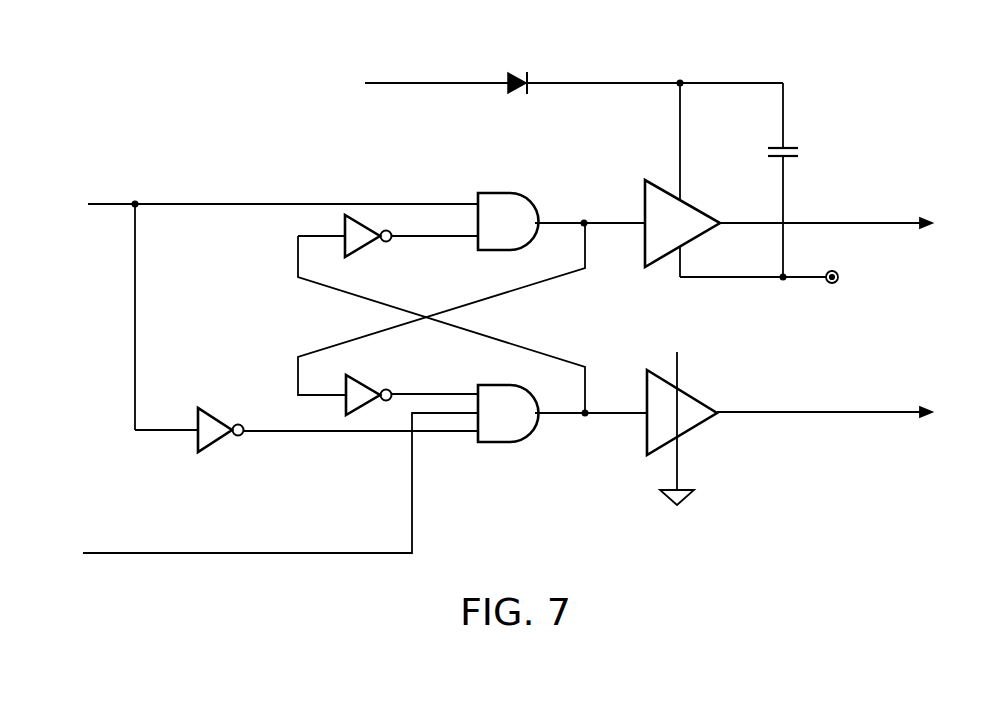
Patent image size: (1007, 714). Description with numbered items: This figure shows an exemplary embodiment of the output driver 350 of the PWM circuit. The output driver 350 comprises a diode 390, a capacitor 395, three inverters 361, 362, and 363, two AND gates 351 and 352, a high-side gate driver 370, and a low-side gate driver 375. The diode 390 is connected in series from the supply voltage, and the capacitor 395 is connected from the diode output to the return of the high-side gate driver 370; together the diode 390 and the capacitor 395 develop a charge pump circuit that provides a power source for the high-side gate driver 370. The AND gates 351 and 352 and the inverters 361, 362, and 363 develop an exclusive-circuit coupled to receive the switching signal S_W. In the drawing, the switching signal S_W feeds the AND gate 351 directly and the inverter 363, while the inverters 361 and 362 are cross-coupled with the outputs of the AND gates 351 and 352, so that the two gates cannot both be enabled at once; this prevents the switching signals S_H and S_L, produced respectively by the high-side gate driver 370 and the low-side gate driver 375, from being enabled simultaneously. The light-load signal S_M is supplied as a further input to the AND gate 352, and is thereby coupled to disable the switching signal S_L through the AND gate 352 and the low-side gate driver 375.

The output driver 350 is at (976, 84).
The AND gate 351 is at (497, 191).
The AND gate 352 is at (497, 445).
The inverter 361 is at (366, 213).
The inverter 362 is at (366, 416).
The inverter 363 is at (222, 450).
The high-side gate driver 370 is at (643, 248).
The low-side gate driver 375 is at (692, 434).
The diode 390 is at (515, 66).
The capacitor 395 is at (801, 152).